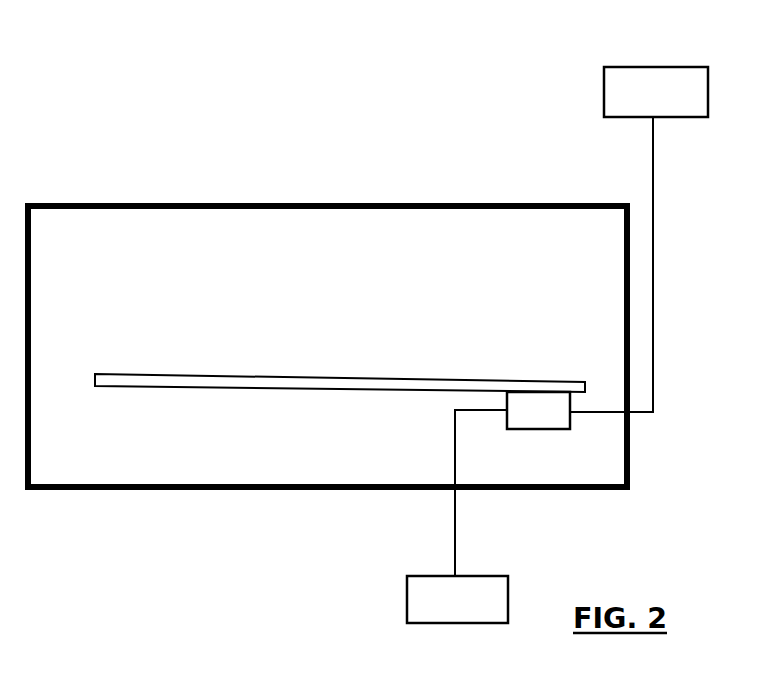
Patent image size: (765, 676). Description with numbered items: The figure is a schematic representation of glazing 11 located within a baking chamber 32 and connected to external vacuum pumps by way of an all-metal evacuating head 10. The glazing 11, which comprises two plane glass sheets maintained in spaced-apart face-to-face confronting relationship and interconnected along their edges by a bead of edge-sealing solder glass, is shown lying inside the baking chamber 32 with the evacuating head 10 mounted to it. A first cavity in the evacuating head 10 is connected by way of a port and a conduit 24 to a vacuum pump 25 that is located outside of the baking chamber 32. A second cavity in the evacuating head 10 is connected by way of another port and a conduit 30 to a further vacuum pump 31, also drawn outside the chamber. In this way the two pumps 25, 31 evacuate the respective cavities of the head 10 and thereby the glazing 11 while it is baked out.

The evacuating head 10 is at (551, 413).
The glazing 11 is at (264, 373).
The conduit 24 is at (654, 290).
The vacuum pump 25 is at (643, 80).
The conduit 30 is at (453, 431).
The further vacuum pump 31 is at (425, 597).
The baking chamber 32 is at (290, 205).